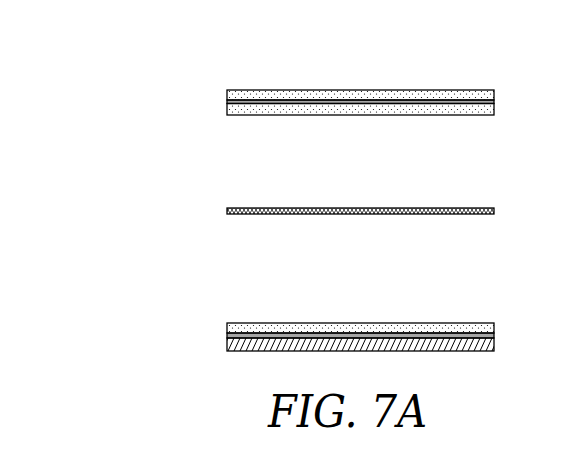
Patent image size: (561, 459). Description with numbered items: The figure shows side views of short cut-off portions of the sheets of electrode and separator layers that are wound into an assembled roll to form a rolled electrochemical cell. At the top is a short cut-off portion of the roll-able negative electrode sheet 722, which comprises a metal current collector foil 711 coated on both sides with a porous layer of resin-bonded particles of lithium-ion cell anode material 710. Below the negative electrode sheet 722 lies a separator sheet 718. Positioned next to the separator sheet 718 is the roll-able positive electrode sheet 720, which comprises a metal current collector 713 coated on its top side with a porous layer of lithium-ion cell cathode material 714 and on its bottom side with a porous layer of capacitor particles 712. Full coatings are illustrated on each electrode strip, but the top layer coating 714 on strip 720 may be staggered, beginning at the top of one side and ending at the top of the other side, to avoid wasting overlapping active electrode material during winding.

The negative electrode material 710 is at (227, 108).
The metal current collector foil 711 is at (364, 96).
The porous layer of capacitor particles 712 is at (227, 344).
The metal current collector 713 is at (347, 334).
The lithium-ion cell cathode material 714 is at (227, 330).
The separator sheet 718 is at (226, 211).
The positive electrode sheet 720 is at (315, 328).
The negative electrode sheet 722 is at (314, 73).